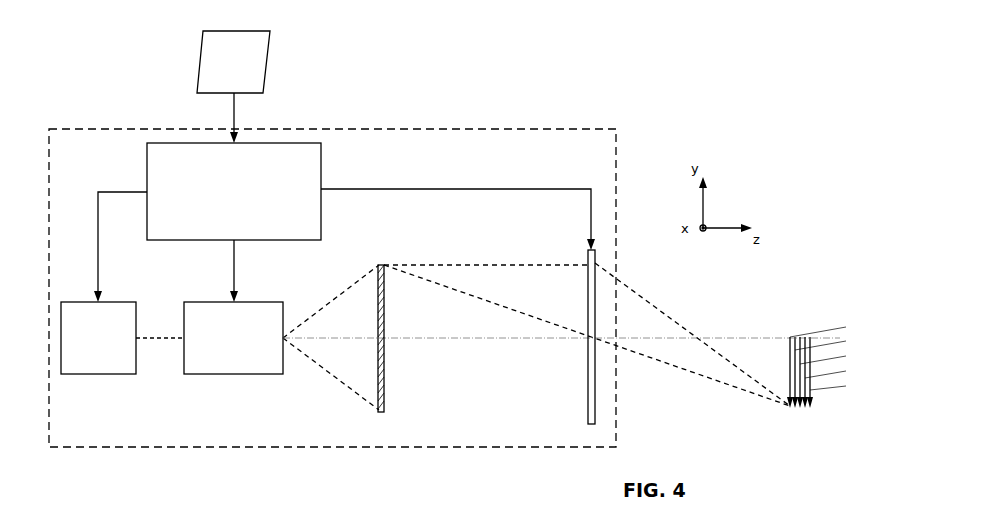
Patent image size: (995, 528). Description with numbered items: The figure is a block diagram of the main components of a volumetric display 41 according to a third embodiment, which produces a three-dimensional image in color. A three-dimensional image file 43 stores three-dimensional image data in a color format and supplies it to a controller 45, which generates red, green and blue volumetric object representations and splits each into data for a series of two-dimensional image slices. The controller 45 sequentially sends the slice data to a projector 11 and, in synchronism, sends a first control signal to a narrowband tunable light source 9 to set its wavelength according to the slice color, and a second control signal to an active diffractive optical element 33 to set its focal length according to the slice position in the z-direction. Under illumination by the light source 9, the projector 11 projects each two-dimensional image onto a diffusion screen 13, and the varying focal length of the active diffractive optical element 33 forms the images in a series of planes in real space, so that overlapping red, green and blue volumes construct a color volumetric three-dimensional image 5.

The volumetric three-dimensional image 5 is at (776, 312).
The light source 9 is at (98, 376).
The projector 11 is at (233, 376).
The diffusion screen 13 is at (384, 393).
The active diffractive optical element 33 is at (588, 400).
The volumetric display 41 is at (333, 128).
The 3D image file 43 is at (271, 63).
The controller 45 is at (321, 213).